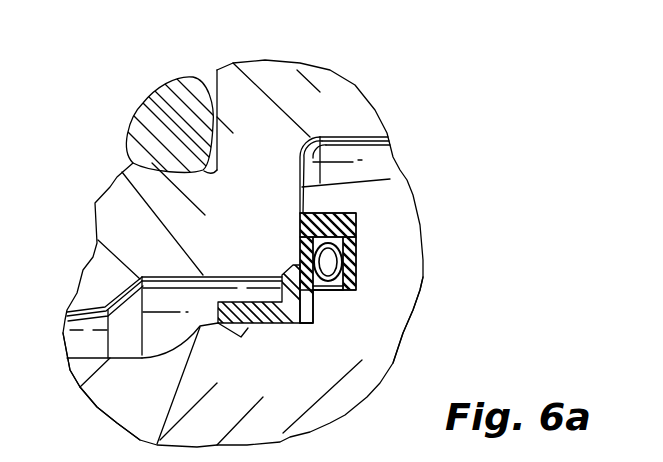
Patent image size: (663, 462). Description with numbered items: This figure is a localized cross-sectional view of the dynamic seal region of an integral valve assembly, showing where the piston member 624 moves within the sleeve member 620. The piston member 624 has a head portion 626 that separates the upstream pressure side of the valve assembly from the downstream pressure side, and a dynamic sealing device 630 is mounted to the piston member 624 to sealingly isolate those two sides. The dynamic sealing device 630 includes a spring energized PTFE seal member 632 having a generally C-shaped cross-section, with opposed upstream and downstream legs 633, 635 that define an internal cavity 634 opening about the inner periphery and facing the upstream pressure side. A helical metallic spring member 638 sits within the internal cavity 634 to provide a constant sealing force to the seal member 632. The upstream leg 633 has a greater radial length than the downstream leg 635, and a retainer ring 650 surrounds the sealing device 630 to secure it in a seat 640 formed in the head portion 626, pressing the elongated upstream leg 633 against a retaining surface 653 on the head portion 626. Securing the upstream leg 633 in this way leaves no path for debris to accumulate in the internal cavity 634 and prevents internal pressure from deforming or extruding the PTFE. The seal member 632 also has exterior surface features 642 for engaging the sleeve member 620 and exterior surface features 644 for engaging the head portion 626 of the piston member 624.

The sleeve member 620 is at (265, 80).
The piston member 624 is at (118, 400).
The head portion 626 is at (400, 334).
The dynamic sealing device 630 is at (358, 210).
The seal member 632 is at (331, 207).
The upstream leg 633 is at (300, 243).
The internal cavity 634 is at (328, 293).
The downstream leg 635 is at (356, 263).
The helical metallic spring member 638 is at (331, 253).
The seat 640 is at (300, 198).
The exterior surface features 642 is at (288, 270).
The exterior surface features 644 is at (342, 288).
The retainer ring 650 is at (270, 324).
The retaining surface 653 is at (283, 323).